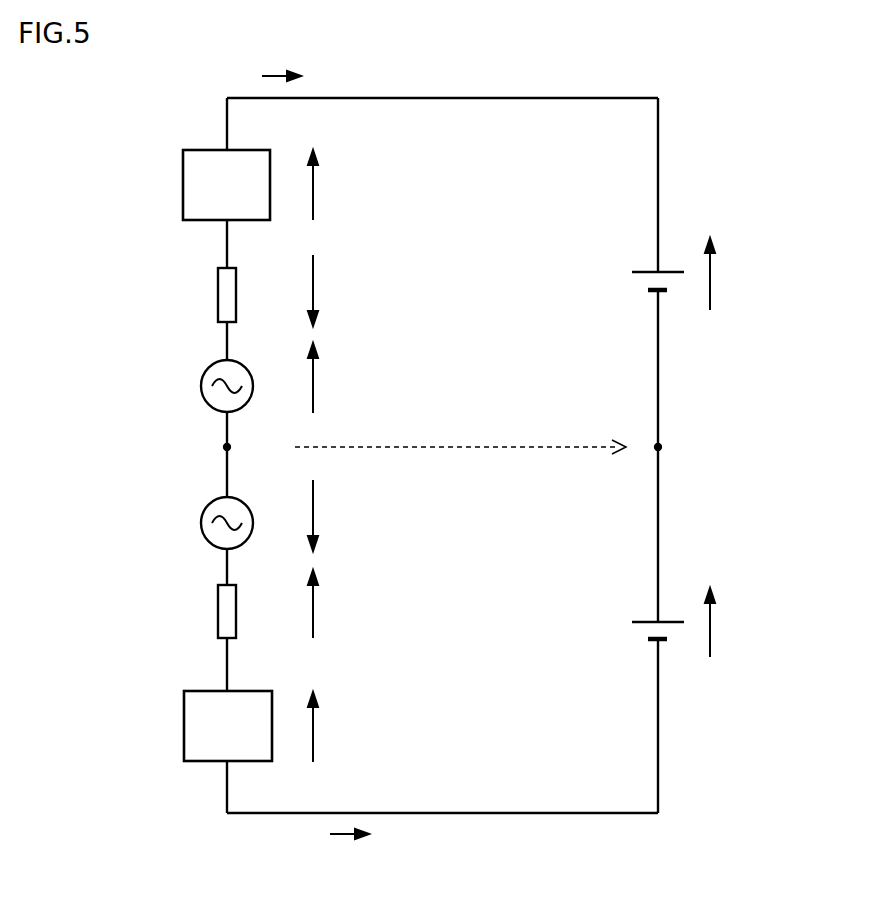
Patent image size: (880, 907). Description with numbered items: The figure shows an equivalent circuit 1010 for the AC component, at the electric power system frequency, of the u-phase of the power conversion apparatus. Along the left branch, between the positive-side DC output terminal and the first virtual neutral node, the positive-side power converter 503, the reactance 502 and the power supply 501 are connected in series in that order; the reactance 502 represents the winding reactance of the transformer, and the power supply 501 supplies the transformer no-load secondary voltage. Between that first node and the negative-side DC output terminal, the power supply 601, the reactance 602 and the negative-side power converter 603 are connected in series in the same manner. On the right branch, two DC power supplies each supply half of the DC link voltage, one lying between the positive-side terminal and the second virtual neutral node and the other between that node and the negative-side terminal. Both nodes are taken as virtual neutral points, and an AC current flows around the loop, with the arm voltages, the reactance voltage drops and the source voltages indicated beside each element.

The equivalent circuit 1010 is at (131, 90).
The power supply 501 is at (201, 387).
The reactance 502 is at (218, 297).
The positive-side power converter 503 is at (183, 185).
The power supply 601 is at (201, 524).
The reactance 602 is at (218, 612).
The negative-side power converter 603 is at (184, 728).